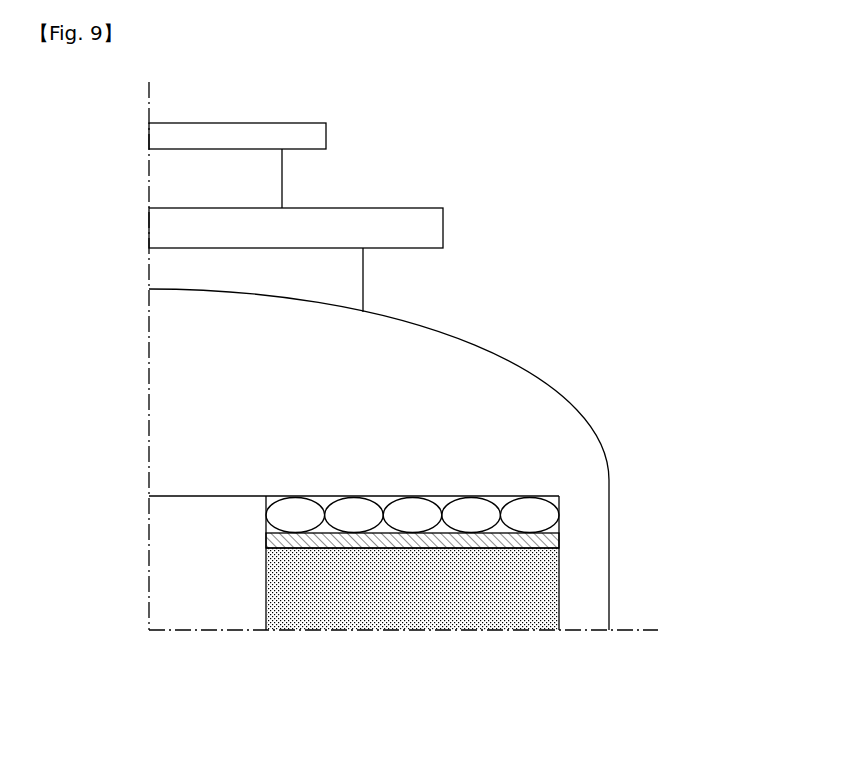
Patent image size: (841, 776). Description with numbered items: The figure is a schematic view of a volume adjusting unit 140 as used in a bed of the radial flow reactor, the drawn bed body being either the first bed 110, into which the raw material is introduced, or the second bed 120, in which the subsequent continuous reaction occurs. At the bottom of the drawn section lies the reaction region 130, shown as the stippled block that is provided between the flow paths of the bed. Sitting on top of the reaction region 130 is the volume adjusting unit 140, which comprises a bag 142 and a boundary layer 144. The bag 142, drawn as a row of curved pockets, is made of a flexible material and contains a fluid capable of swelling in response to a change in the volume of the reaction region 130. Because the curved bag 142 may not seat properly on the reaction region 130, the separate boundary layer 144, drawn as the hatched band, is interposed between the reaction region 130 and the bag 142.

The first bed 110 is at (433, 459).
The second bed 120 is at (555, 381).
The reaction region 130 is at (472, 602).
The volume adjusting unit 140 is at (539, 518).
The bag 142 is at (540, 497).
The boundary layer 144 is at (517, 542).